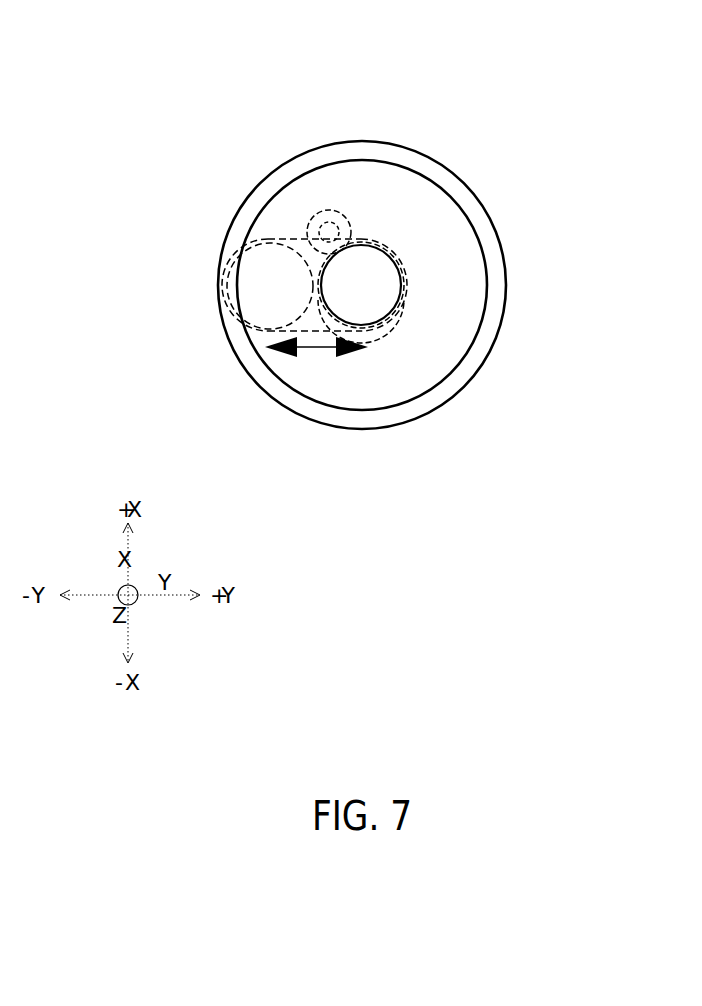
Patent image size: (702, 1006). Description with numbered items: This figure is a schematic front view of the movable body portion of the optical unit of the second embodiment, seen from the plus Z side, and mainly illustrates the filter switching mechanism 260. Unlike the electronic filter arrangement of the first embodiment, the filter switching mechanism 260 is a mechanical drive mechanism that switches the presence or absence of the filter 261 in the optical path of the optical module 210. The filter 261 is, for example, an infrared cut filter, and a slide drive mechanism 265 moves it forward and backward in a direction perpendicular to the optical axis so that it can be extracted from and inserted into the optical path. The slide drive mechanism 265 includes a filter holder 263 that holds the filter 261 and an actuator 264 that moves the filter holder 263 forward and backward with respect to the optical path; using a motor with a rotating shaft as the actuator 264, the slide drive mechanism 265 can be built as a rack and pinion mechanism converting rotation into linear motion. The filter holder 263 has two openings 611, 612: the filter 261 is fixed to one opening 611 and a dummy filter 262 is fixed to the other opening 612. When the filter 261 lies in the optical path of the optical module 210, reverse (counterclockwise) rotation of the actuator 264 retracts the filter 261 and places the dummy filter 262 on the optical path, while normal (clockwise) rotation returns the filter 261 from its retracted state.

The optical module 210 is at (373, 267).
The filter switching mechanism 260 is at (280, 155).
The filter 261 is at (403, 318).
The dummy filter 262 is at (240, 303).
The filter holder 263 is at (292, 238).
The actuator 264 is at (326, 225).
The slide drive mechanism 265 is at (398, 248).
The opening 611 is at (375, 330).
The opening 612 is at (253, 290).